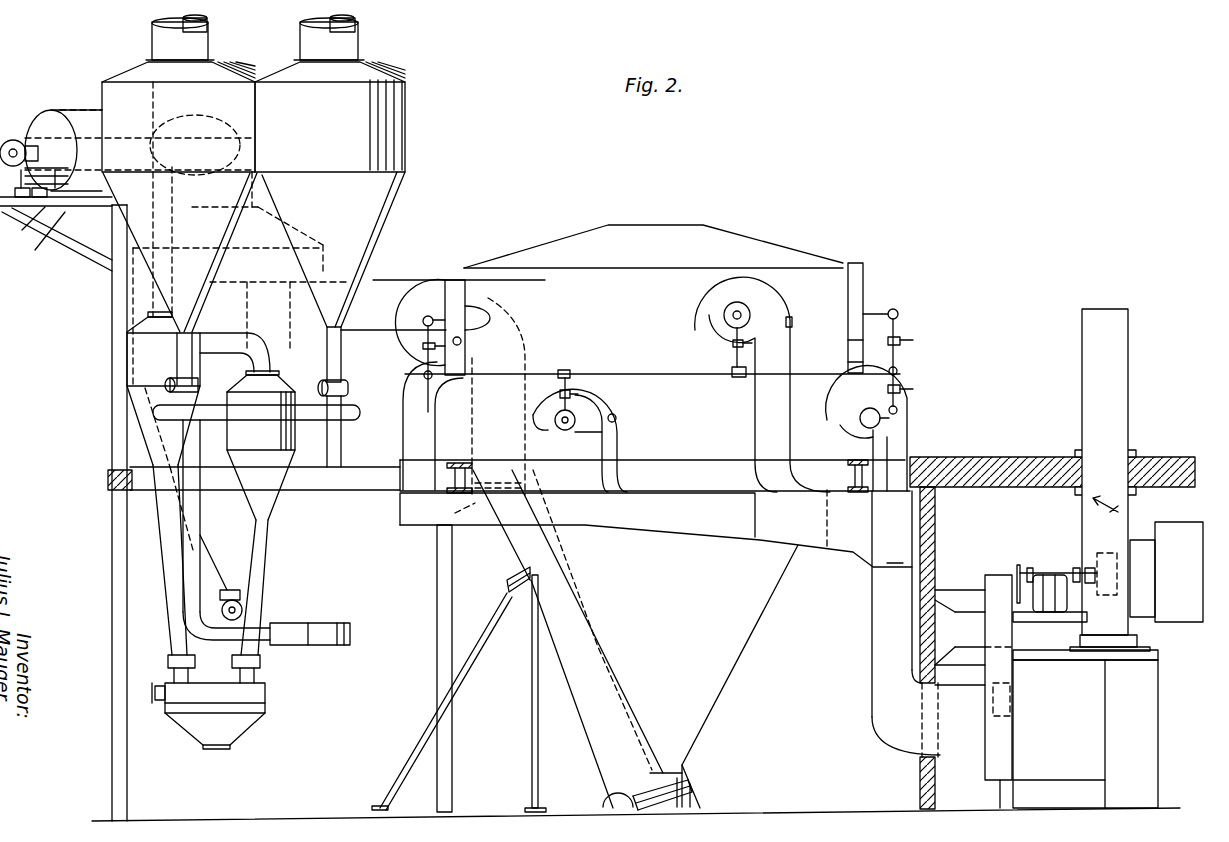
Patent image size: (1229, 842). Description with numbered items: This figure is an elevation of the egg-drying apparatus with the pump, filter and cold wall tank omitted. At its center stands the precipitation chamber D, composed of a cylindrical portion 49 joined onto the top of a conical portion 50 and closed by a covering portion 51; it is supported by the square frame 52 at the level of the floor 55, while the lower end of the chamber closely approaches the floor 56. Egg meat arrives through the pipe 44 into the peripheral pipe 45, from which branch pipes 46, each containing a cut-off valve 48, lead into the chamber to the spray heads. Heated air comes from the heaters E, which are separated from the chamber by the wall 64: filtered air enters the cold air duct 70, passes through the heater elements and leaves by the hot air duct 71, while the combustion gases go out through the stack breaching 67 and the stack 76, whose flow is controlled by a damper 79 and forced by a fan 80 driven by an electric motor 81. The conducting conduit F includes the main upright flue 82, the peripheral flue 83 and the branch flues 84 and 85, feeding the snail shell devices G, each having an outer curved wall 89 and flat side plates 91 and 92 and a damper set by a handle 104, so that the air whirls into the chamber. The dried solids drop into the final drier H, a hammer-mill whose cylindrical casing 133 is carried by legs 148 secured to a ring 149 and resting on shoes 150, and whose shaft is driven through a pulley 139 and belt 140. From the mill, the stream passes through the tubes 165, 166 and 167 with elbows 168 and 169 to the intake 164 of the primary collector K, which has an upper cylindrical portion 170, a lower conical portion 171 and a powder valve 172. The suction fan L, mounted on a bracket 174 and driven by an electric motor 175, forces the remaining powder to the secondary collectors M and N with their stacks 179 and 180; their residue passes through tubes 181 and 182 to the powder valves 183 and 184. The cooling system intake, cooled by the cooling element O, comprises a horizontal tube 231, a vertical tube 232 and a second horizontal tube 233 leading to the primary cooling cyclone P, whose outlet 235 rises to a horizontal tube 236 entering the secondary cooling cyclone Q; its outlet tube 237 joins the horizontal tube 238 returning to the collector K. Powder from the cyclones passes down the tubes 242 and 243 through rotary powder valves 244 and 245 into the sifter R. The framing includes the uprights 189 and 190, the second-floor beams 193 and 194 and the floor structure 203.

The stack 179 is at (206, 30).
The stack 180 is at (358, 36).
The secondary powder collector M is at (118, 82).
The secondary powder collector N is at (385, 100).
The suction fan L is at (47, 120).
The horizontal tube 238 is at (272, 190).
The outlet tube 237 is at (112, 223).
The bracket 174 is at (22, 230).
The electric motor 175 is at (40, 242).
The upper cylindrical portion 170 is at (112, 282).
The upright 189 is at (112, 548).
The secondary cooling cyclone collector Q is at (127, 347).
The tube 181 is at (180, 366).
The horizontal tube 236 is at (218, 340).
The outlet 235 is at (270, 368).
The primary powder collector K is at (300, 435).
The second horizontal tube 233 is at (262, 414).
The intake 164 is at (364, 354).
The tube 182 is at (341, 360).
The powder valve 184 is at (346, 390).
The powder valve 183 is at (168, 392).
The tube 167 is at (378, 282).
The elbow 168 is at (403, 553).
The floor structure 203 is at (343, 467).
The beam 193 is at (108, 484).
The beam 194 is at (366, 496).
The vertical tube 232 is at (205, 548).
The primary cooling cyclone collector P is at (268, 502).
The lower conical portion 171 is at (238, 560).
The collecting tube 242 is at (262, 586).
The tube 243 is at (174, 570).
The horizontal tube 231 is at (243, 614).
The cooling element O is at (324, 628).
The powder valve 172 is at (226, 543).
The rotary powder valve 244 is at (260, 660).
The rotary powder valve 245 is at (168, 660).
The sifter R is at (265, 698).
The shoe 150 is at (380, 806).
The leg 148 is at (462, 680).
The ring 149 is at (506, 585).
The cylindrical casing 133 is at (572, 690).
The final drier H is at (598, 724).
The pulley 139 is at (606, 800).
The belt 140 is at (674, 766).
The upright 190 is at (437, 628).
The tube 165 is at (500, 551).
The square frame 52 is at (447, 497).
The flat plate 92 is at (449, 280).
The outer curved wall 89 is at (458, 282).
The snail shell device G is at (472, 300).
The elbow 169 is at (508, 312).
The handle 104 is at (461, 341).
The cut-off valve 48 is at (420, 346).
The branch pipe 46 is at (424, 374).
The pipe 44 is at (449, 434).
The peripheral pipe 45 is at (640, 374).
The flat plate 91 is at (555, 422).
The tube 166 is at (520, 448).
The branch flue 84 is at (612, 452).
The branch flue 85 is at (408, 413).
The covering portion 51 is at (748, 238).
The precipitation chamber D is at (800, 258).
The cylindrical portion 49 is at (852, 272).
The stack 76 is at (1082, 355).
The floor 55 is at (1002, 462).
The damper 79 is at (1093, 500).
The stack breaching 67 is at (1168, 526).
The fan 80 is at (1090, 556).
The cold air duct 70 is at (955, 600).
The wall 64 is at (893, 566).
The conducting conduit F is at (890, 598).
The main upright flue 82 is at (882, 626).
The electric motor 81 is at (1053, 612).
The hot air duct 71 is at (905, 742).
The heater E is at (1148, 728).
The conical portion 50 is at (710, 660).
The peripheral flue 83 is at (728, 527).
The floor 56 is at (770, 810).